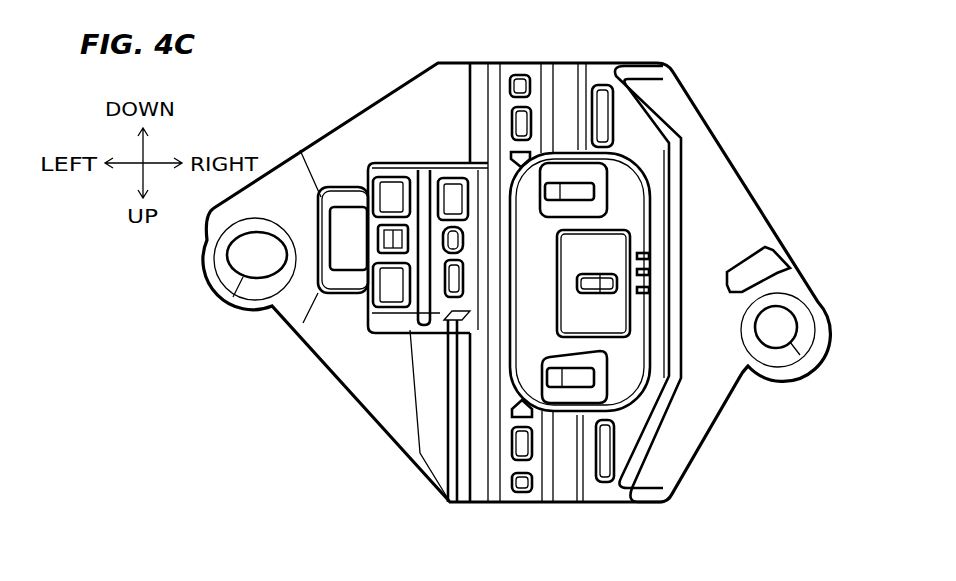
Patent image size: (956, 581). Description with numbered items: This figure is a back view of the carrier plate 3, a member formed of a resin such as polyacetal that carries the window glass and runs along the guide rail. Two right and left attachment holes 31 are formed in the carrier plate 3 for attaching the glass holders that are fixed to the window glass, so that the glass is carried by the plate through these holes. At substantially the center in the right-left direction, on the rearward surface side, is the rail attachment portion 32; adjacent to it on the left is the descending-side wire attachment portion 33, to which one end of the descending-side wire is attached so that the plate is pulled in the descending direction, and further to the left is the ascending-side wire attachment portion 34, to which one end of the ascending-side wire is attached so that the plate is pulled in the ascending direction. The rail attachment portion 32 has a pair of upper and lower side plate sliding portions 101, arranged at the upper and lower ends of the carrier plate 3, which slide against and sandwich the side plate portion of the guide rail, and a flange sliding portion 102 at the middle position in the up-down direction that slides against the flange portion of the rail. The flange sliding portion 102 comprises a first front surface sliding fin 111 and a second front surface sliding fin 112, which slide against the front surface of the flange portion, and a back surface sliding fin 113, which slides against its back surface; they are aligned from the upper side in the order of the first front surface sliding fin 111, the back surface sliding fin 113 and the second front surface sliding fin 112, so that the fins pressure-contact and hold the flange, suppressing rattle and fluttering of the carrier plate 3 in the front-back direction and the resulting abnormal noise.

The carrier plate 3 is at (752, 112).
The attachment holes 31 is at (233, 298).
The rail attachment portion 32 is at (575, 63).
The descending-side wire attachment portion 33 is at (463, 487).
The ascending-side wire attachment portion 34 is at (407, 320).
The side plate sliding portions 101 is at (533, 100).
The flange sliding portion 102 is at (715, 282).
The first front surface sliding fin 111 is at (577, 377).
The second front surface sliding fin 112 is at (590, 197).
The back surface sliding fin 113 is at (600, 283).